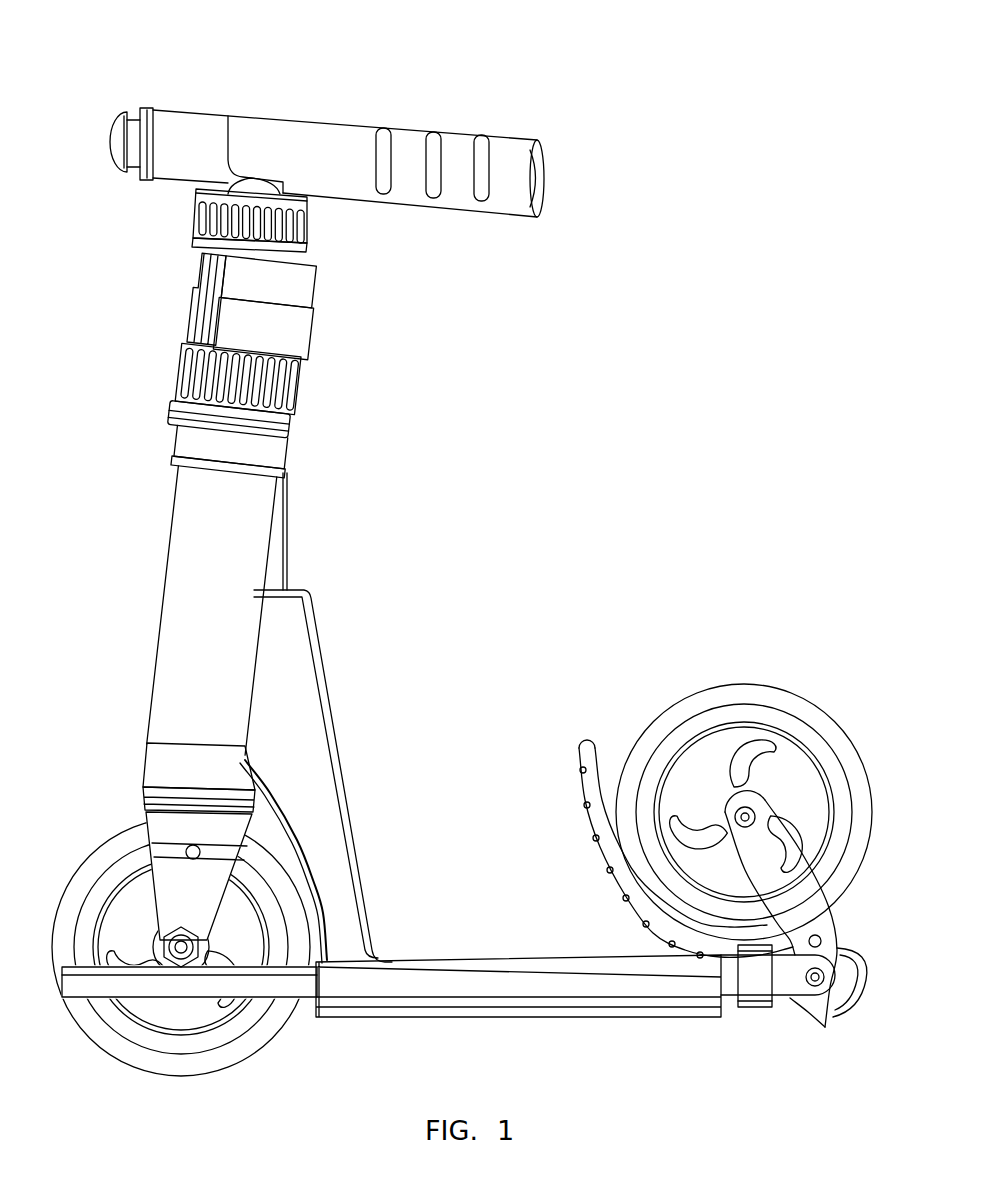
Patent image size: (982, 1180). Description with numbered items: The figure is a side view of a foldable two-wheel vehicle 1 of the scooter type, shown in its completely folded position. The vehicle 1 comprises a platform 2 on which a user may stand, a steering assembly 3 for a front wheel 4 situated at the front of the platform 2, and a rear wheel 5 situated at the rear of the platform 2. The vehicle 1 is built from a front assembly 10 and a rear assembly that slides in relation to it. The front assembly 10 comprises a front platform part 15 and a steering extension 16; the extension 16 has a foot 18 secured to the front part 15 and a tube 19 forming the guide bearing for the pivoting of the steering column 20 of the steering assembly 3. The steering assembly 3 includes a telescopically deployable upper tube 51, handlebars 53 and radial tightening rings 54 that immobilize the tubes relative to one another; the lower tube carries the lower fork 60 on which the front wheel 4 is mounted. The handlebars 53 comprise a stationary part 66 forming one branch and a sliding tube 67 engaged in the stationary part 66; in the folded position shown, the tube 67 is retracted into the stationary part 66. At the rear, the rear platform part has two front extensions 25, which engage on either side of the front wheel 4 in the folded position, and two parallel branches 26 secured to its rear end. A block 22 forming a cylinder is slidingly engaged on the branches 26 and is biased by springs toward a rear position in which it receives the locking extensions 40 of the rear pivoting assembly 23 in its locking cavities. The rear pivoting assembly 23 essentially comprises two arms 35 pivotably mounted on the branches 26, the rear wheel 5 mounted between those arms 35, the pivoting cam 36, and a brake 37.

The foldable two-wheel vehicle 1 is at (794, 148).
The platform 2 is at (521, 921).
The steering assembly 3 is at (111, 48).
The front wheel 4 is at (103, 838).
The rear wheel 5 is at (787, 691).
The front assembly 10 is at (389, 909).
The front platform part 15 is at (463, 960).
The steering extension 16 is at (343, 735).
The foot 18 is at (298, 670).
The tube 19 is at (180, 614).
The steering column 20 is at (132, 467).
The locking part (block forming a cylinder) 22 is at (752, 995).
The rear pivoting assembly 23 is at (621, 678).
The front extensions 25 is at (107, 988).
The branches 26 is at (720, 990).
The arms 35 is at (775, 865).
The pivoting cam 36 is at (853, 962).
The brake 37 is at (600, 795).
The locking extensions 40 is at (830, 1022).
The upper tube 51 is at (201, 343).
The handlebars 53 is at (293, 117).
The radial tightening rings 54 is at (307, 236).
The lower fork 60 is at (143, 790).
The stationary part 66 is at (513, 141).
The sliding tube 67 is at (193, 125).